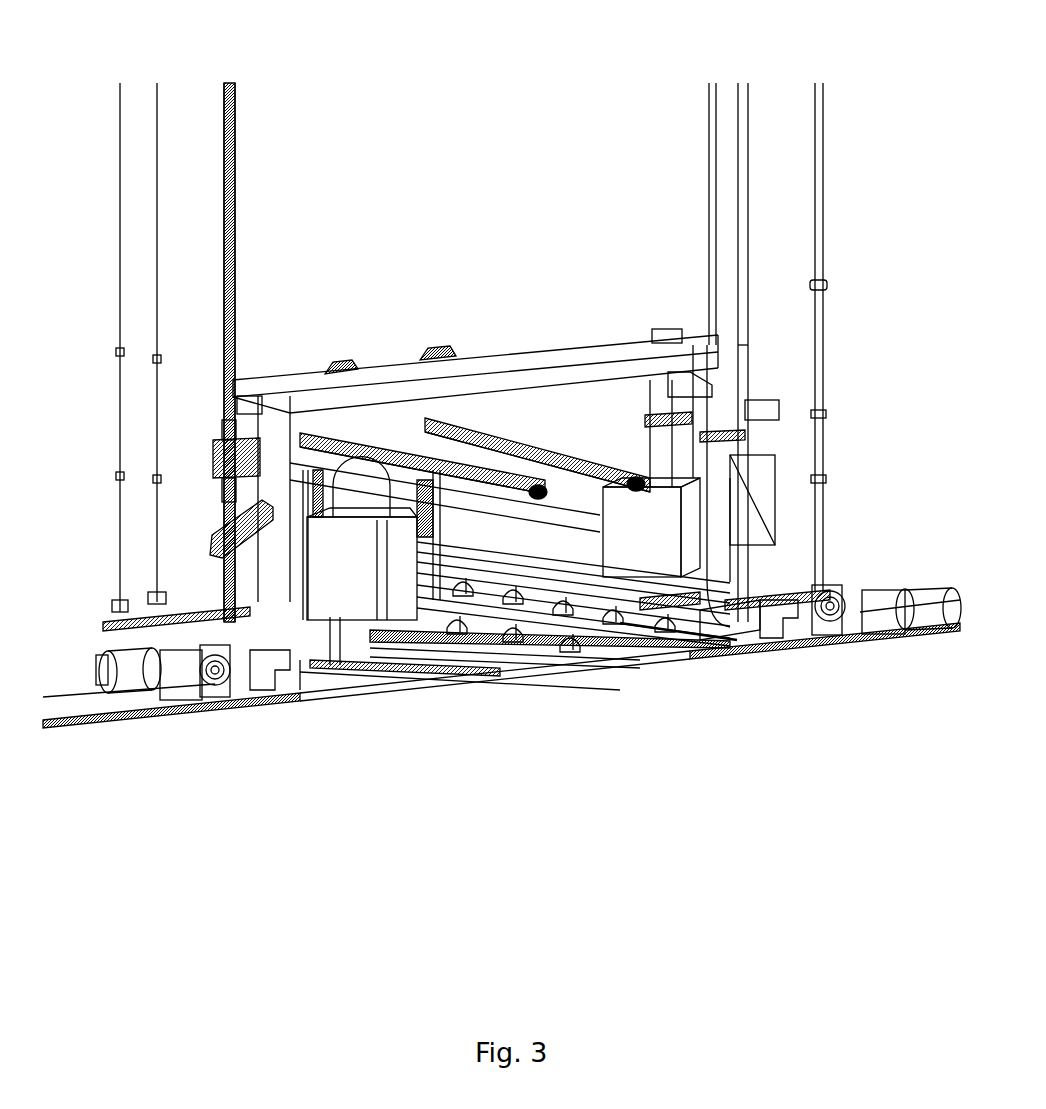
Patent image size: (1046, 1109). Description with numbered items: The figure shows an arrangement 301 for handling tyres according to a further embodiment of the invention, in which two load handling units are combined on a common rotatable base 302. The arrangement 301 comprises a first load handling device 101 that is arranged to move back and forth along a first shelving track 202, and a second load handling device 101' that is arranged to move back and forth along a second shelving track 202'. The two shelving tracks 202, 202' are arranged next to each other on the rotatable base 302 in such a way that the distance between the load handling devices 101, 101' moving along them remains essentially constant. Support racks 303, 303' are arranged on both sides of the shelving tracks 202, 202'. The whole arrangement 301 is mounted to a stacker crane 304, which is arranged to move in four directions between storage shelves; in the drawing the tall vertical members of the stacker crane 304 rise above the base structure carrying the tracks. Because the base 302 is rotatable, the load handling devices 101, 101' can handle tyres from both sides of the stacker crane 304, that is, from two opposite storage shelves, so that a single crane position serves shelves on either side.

The stacker crane 304 is at (267, 317).
The first load handling device 101 is at (360, 246).
The second load handling device 101' is at (450, 239).
The rotatable base 302 is at (518, 700).
The support rack 303 is at (490, 720).
The support rack 303' is at (641, 697).
The first shelving track 202 is at (470, 626).
The second shelving track 202' is at (742, 695).
The arrangement for handling tyres 301 is at (724, 862).